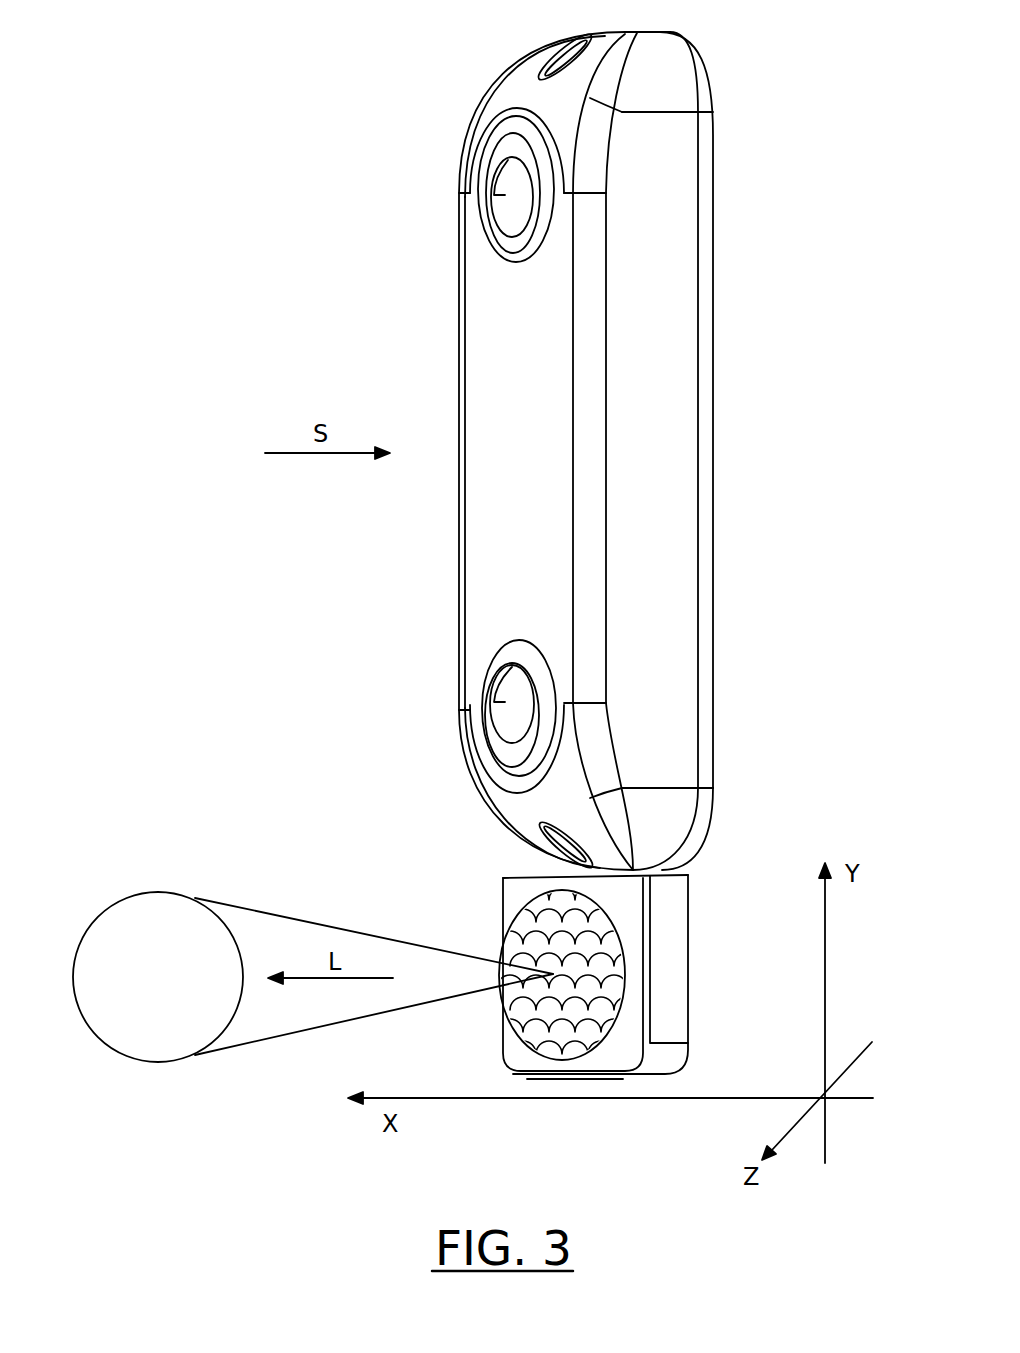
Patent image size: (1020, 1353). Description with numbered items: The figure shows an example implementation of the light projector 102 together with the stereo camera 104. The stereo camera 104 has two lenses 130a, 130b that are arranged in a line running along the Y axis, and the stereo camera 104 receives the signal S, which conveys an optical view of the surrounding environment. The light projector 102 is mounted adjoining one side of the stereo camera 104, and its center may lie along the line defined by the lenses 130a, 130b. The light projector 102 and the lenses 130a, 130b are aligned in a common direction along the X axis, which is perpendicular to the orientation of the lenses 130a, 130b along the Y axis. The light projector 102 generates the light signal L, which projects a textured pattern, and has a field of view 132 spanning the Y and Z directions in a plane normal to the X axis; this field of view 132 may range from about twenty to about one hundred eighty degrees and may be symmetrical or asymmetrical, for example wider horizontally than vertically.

The stereo camera 104 is at (713, 412).
The lens 130a is at (509, 211).
The lens 130b is at (508, 701).
The light projector 102 is at (688, 968).
The field of view 132 is at (178, 992).